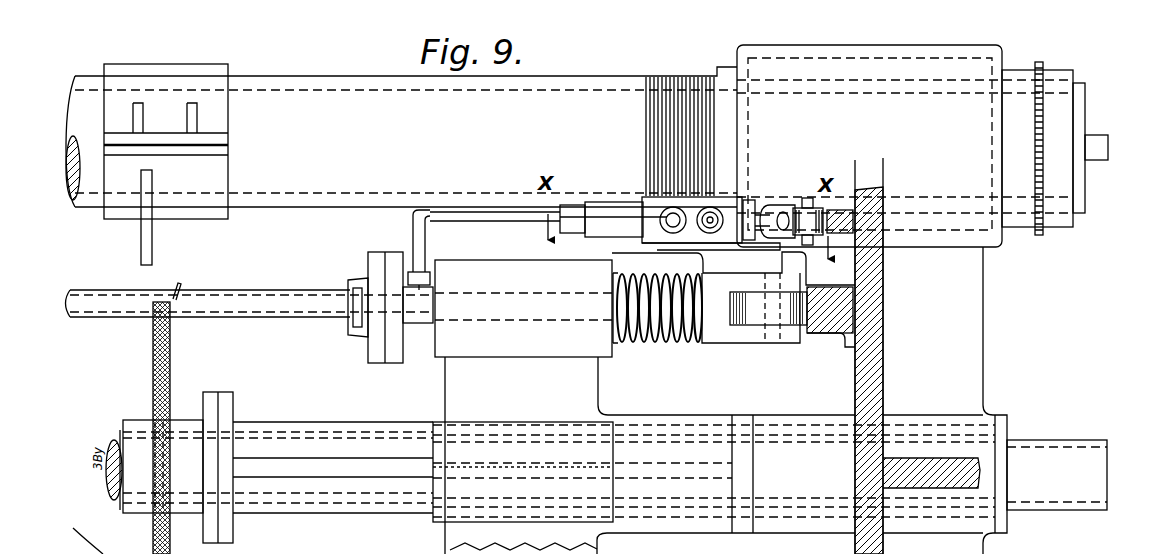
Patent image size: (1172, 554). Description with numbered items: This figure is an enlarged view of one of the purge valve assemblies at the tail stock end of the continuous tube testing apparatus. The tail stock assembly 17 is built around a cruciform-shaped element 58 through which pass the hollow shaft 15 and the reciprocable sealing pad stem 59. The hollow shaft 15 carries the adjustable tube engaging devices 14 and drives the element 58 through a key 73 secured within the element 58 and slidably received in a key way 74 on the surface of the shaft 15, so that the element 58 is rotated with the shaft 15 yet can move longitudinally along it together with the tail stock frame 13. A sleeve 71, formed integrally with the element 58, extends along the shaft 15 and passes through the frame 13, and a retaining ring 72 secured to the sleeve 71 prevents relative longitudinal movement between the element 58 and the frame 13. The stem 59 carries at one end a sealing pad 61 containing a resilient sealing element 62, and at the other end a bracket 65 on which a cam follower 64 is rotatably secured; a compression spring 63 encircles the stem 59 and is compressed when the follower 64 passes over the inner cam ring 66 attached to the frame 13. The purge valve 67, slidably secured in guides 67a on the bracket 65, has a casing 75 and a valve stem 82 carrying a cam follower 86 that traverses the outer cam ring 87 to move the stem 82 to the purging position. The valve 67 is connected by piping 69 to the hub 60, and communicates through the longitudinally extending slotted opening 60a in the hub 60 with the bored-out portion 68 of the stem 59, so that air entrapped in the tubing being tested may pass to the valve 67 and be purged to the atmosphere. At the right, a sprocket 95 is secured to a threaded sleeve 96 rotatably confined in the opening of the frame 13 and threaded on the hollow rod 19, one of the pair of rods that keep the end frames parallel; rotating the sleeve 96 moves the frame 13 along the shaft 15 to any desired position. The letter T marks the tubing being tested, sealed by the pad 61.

The tail stock frame 13 is at (975, 344).
The tube engaging device 14 is at (170, 368).
The hollow shaft 15 is at (115, 436).
The tail stock assembly 17 is at (522, 396).
The hollow rod 19 is at (298, 92).
The cruciform-shaped element 58 is at (583, 396).
The sealing pad stem 59 is at (658, 284).
The hub 60 is at (427, 263).
The slotted opening 60a is at (414, 256).
The sealing pad 61 is at (362, 334).
The resilient sealing element 62 is at (363, 280).
The compression spring 63 is at (659, 343).
The cam follower 64 is at (772, 313).
The bracket 65 is at (746, 336).
The inner cam ring 66 is at (835, 331).
The purge valve 67 is at (650, 206).
The guide 67a is at (650, 251).
The bored-out portion 68 is at (430, 296).
The piping 69 is at (518, 226).
The sleeve 71 is at (797, 438).
The retaining ring 72 is at (1007, 421).
The key 73 is at (540, 468).
The key way 74 is at (358, 466).
The casing 75 is at (745, 190).
The valve stem 82 is at (757, 212).
The cam follower 86 is at (797, 214).
The outer cam ring 87 is at (840, 210).
The sprocket 95 is at (1041, 101).
The threaded sleeve 96 is at (1056, 132).
The shaft T is at (237, 300).